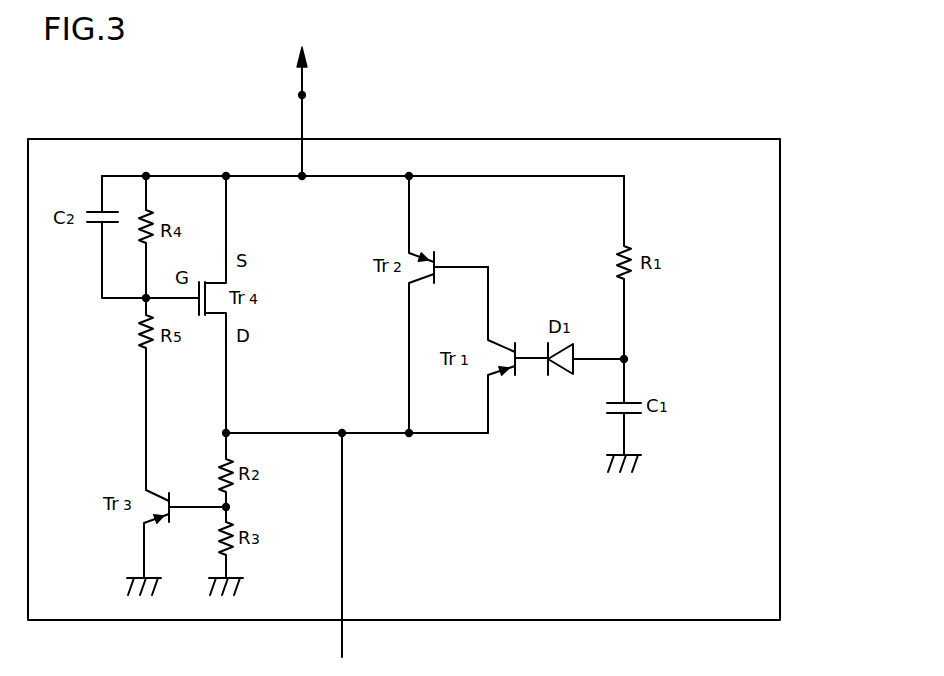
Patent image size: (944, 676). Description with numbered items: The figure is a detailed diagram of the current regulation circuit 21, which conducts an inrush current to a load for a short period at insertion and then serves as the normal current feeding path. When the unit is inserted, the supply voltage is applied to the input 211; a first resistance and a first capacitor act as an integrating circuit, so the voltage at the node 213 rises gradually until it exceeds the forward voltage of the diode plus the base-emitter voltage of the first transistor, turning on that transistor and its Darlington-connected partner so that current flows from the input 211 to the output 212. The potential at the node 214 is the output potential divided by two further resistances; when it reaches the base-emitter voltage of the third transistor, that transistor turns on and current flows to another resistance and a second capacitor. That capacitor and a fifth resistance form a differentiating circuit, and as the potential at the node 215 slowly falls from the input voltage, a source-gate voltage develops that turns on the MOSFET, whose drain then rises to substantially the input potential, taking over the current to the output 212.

The current regulation circuit 21 is at (613, 139).
The input 211 is at (302, 122).
The output 212 is at (342, 565).
The node 213 is at (637, 354).
The node 214 is at (239, 504).
The node 215 is at (146, 300).